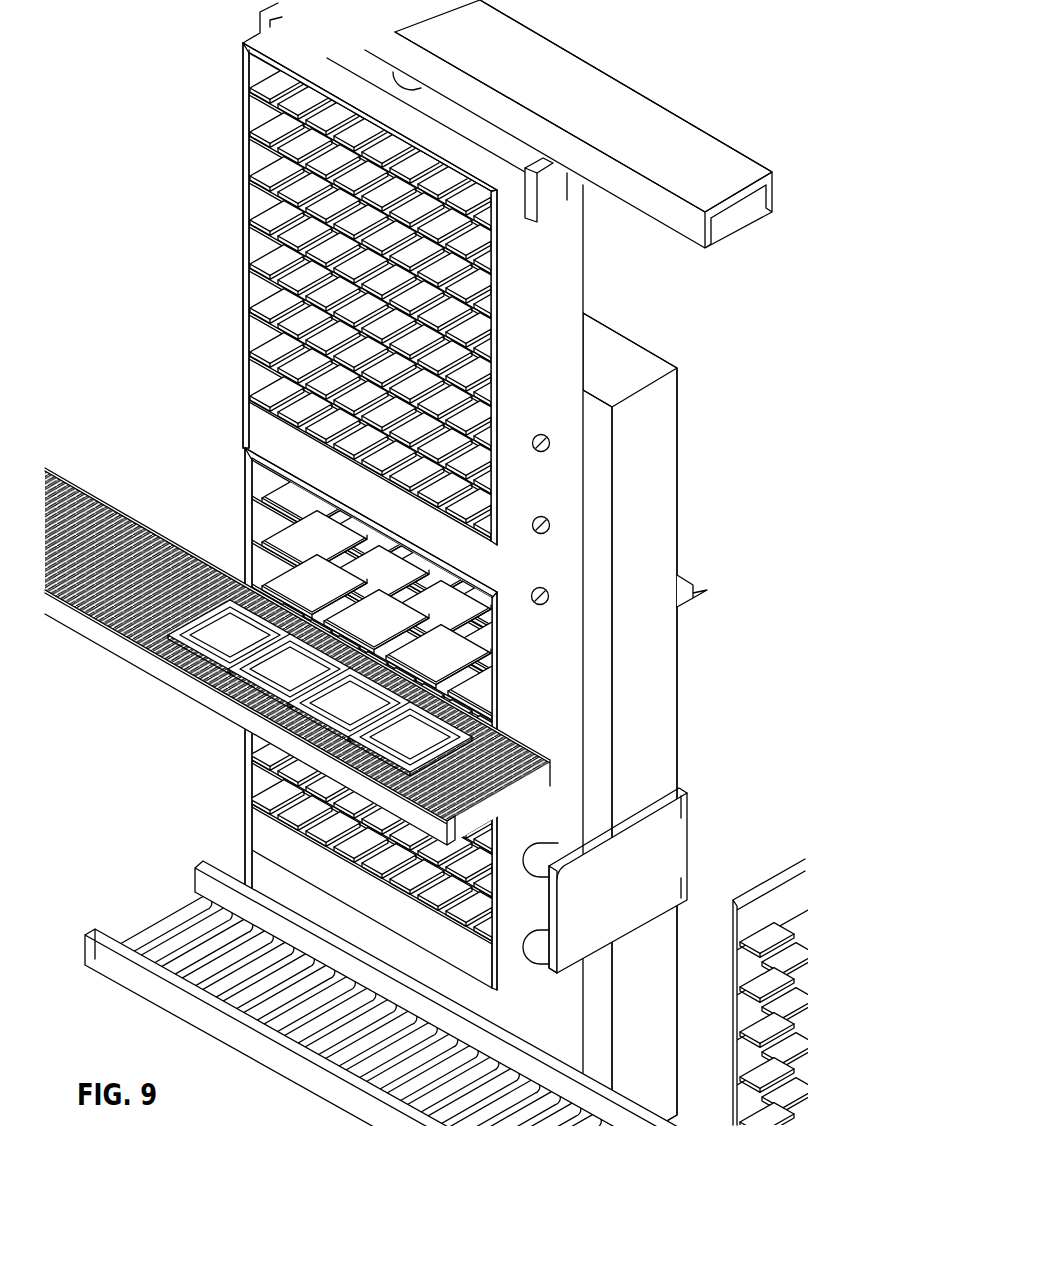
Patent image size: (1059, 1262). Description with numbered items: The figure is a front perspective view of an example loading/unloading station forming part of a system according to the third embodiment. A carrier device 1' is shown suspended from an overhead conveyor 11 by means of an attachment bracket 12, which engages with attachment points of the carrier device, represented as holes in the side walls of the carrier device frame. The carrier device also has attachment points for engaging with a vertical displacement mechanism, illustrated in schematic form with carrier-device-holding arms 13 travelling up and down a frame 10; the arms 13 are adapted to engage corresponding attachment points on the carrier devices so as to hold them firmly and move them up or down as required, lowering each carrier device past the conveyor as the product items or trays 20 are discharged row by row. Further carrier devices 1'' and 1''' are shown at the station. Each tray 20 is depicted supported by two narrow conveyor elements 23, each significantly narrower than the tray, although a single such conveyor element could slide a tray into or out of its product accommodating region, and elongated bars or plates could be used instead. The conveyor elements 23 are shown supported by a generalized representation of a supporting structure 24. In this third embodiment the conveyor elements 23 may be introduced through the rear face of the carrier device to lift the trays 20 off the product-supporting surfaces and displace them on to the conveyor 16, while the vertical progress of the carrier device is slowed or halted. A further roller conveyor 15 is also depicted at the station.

The carrier device 1' is at (333, 294).
The carrier device 1'' is at (356, 708).
The carrier device 1''' is at (774, 950).
The frame 10 is at (660, 415).
The overhead conveyor 11 is at (625, 102).
The attachment bracket 12 is at (553, 198).
The carrier-device-holding arms 13 is at (660, 850).
The roller conveyor 15 is at (300, 1020).
The conveyor 16 is at (93, 537).
The trays 20 is at (288, 670).
The conveyor elements 23 is at (467, 690).
The supporting structure 24 is at (708, 592).